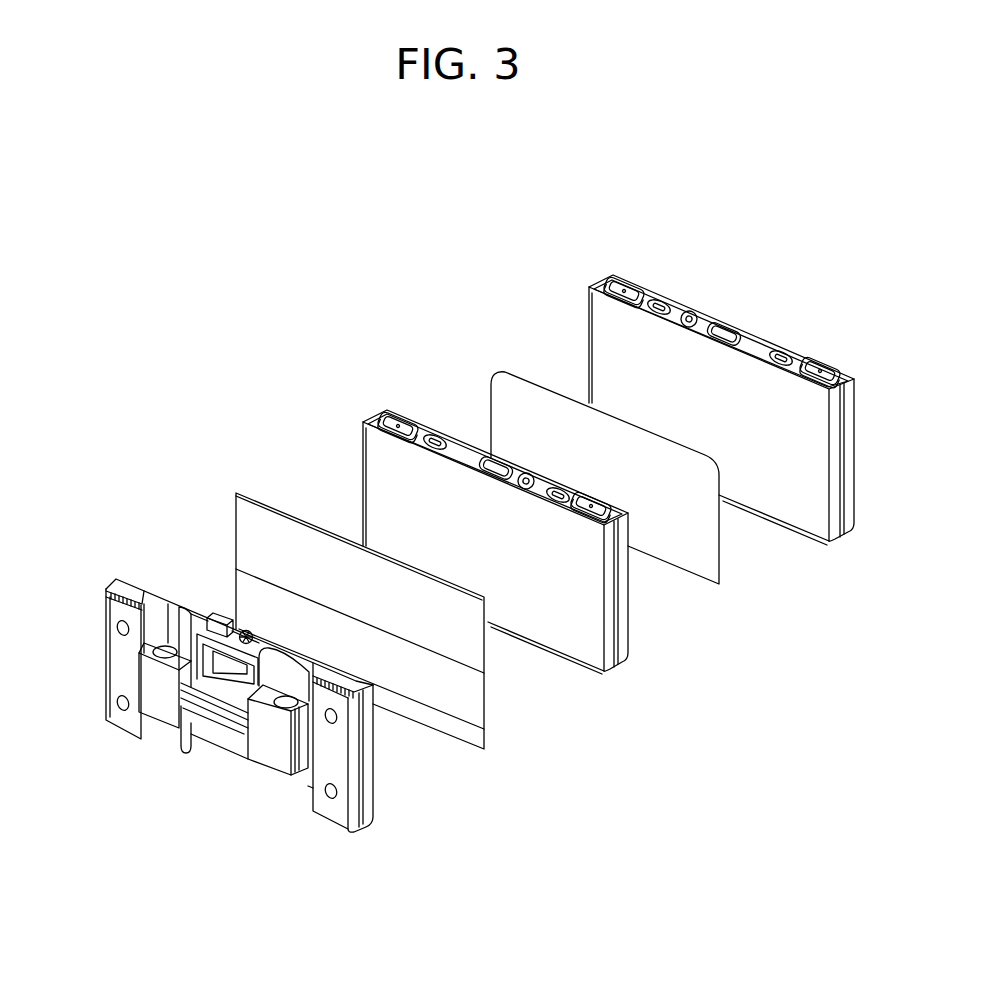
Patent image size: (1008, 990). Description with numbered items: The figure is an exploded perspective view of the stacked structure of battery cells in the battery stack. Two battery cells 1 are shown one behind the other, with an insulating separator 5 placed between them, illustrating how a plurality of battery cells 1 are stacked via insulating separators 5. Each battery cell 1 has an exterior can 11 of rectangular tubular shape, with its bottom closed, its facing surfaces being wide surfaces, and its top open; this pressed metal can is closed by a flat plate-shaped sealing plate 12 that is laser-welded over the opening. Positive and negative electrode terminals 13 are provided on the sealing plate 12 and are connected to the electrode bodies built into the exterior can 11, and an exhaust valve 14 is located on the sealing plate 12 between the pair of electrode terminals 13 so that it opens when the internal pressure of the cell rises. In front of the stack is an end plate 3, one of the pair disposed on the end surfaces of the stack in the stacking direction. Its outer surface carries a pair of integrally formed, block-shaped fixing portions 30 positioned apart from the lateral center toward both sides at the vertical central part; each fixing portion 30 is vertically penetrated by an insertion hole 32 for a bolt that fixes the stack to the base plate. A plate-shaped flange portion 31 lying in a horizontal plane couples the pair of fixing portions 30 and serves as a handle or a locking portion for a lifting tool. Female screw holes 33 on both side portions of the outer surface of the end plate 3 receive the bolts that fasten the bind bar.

The battery cell 1 is at (563, 232).
The end plate 3 is at (390, 850).
The insulating separator 5 is at (682, 553).
The exterior can 11 is at (790, 495).
The sealing plate 12 is at (758, 346).
The electrode terminal 13 is at (624, 290).
The exhaust valve 14 is at (724, 328).
The fixing portion 30 is at (162, 700).
The flange portion 31 is at (218, 705).
The insertion hole 32 is at (164, 641).
The female screw hole 33 is at (118, 712).